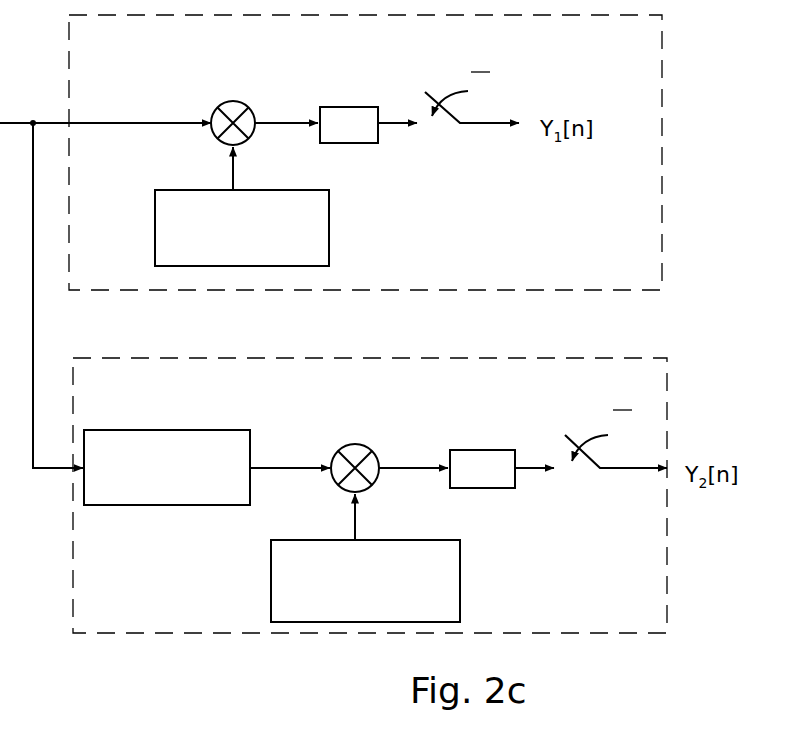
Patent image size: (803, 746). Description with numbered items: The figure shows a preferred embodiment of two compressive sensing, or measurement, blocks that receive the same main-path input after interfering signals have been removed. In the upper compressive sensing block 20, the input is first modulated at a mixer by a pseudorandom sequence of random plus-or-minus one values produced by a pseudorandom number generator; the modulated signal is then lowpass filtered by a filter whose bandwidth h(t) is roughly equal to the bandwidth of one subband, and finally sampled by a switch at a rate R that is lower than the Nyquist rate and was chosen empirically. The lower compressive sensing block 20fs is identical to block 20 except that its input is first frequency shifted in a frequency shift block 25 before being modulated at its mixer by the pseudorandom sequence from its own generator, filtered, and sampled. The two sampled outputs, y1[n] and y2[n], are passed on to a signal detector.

The compressive sensing measurement block 20 is at (602, 234).
The frequency-shifted compressive sensing measurement block 20fs is at (605, 598).
The frequency shift block 25 is at (150, 430).